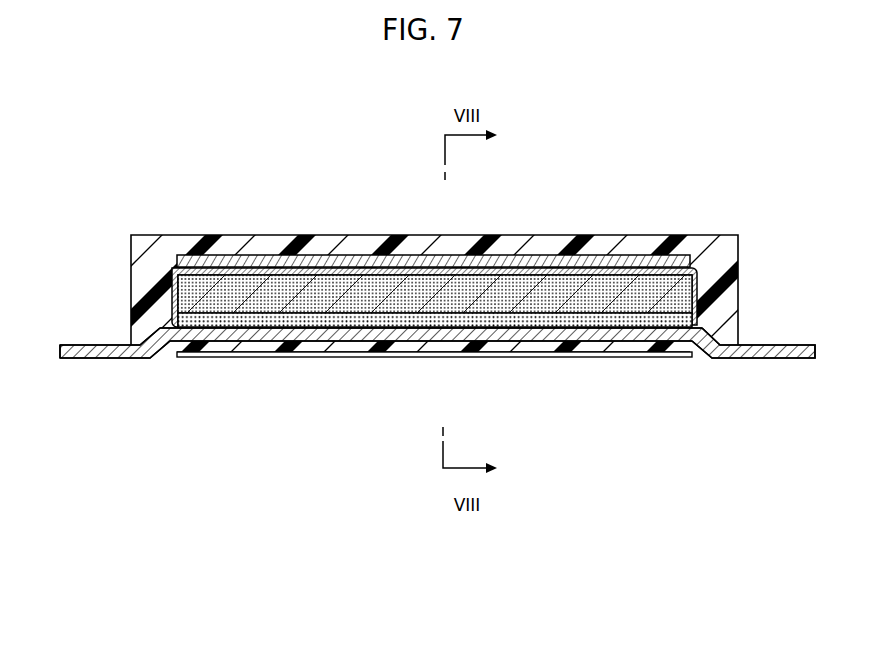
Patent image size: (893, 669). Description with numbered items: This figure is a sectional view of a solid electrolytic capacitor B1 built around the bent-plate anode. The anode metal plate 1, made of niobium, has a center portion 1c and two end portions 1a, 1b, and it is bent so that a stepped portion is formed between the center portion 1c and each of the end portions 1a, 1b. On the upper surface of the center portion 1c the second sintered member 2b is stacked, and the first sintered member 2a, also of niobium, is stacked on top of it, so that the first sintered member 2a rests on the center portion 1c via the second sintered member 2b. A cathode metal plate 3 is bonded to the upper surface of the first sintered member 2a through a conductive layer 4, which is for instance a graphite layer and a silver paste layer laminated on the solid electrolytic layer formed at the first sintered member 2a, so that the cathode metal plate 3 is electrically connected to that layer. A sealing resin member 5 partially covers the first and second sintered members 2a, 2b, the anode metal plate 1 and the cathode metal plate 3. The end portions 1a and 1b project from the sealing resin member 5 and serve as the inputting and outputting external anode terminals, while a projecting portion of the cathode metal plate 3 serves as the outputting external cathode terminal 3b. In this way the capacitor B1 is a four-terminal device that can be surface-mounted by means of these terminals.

The anode metal plate 1 is at (304, 343).
The end portion 1a is at (113, 360).
The end portion 1b is at (768, 359).
The center portion 1c is at (401, 343).
The first sintered member 2a is at (475, 278).
The second sintered member 2b is at (542, 322).
The cathode metal plate 3 is at (396, 268).
The external cathode terminal 3b is at (638, 357).
The conductive layer 4 is at (300, 258).
The sealing resin member 5 is at (230, 242).
The solid electrolytic capacitor B1 is at (125, 172).